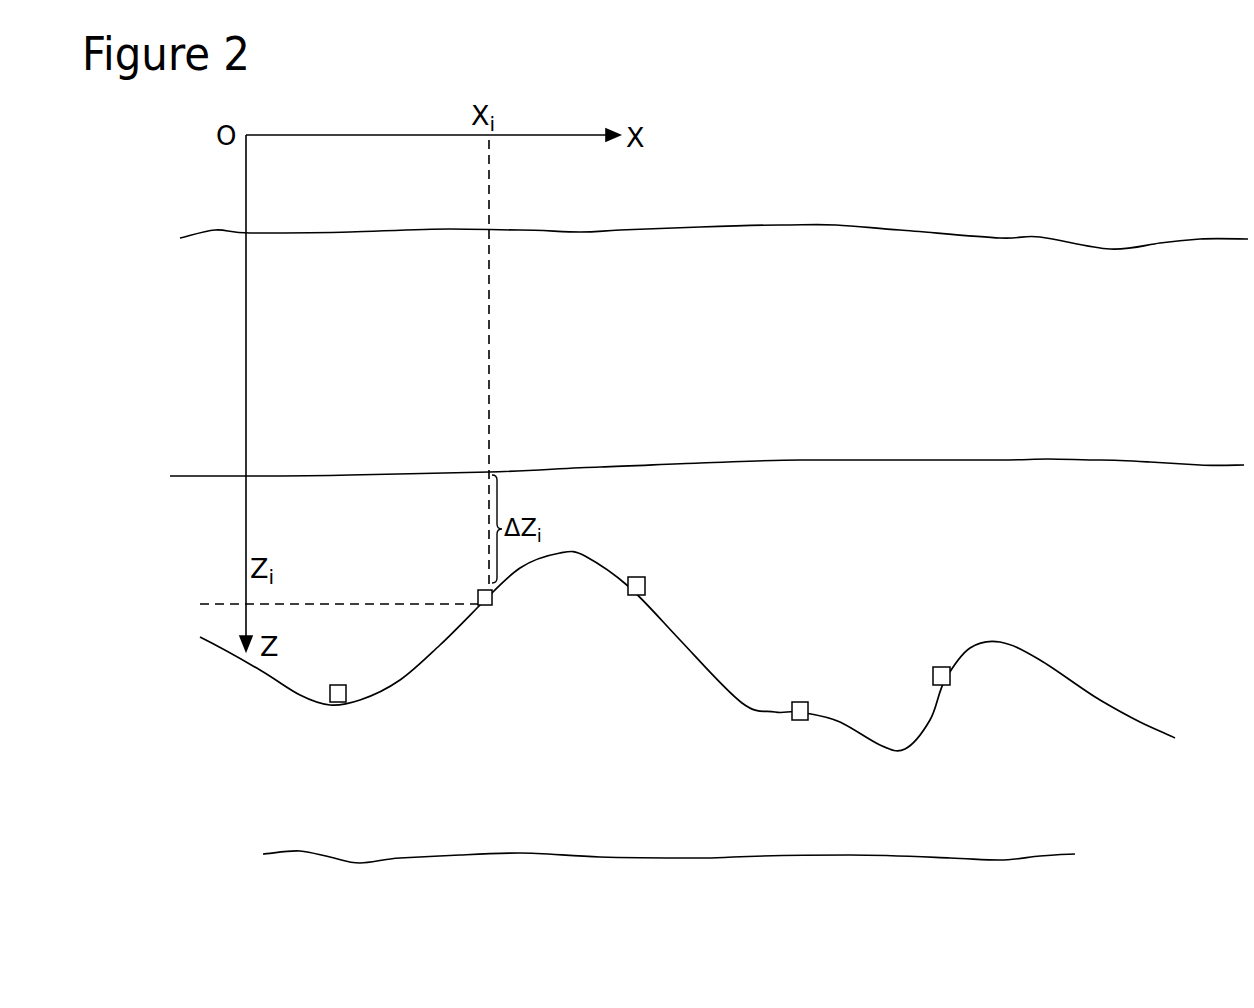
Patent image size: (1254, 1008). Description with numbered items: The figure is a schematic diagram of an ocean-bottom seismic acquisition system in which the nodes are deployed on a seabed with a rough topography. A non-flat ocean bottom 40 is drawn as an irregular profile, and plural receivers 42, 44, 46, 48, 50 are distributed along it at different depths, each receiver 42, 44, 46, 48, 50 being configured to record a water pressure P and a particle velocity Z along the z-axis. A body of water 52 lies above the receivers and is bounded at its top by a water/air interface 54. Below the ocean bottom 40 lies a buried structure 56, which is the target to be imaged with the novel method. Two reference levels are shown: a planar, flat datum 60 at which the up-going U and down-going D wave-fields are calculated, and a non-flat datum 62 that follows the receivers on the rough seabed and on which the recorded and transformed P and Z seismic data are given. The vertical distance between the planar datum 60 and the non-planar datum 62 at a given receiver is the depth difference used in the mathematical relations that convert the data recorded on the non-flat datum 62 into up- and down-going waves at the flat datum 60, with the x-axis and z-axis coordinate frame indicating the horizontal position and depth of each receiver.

The non-flat ocean bottom 40 is at (742, 705).
The receiver 42 is at (346, 695).
The receiver 44 is at (490, 606).
The receiver 46 is at (641, 577).
The receiver 48 is at (799, 702).
The receiver 50 is at (940, 667).
The body of water 52 is at (306, 423).
The water/air interface 54 is at (836, 225).
The structure 56 is at (733, 857).
The planar datum 60 is at (1048, 459).
The non-flat datum 62 is at (1100, 700).